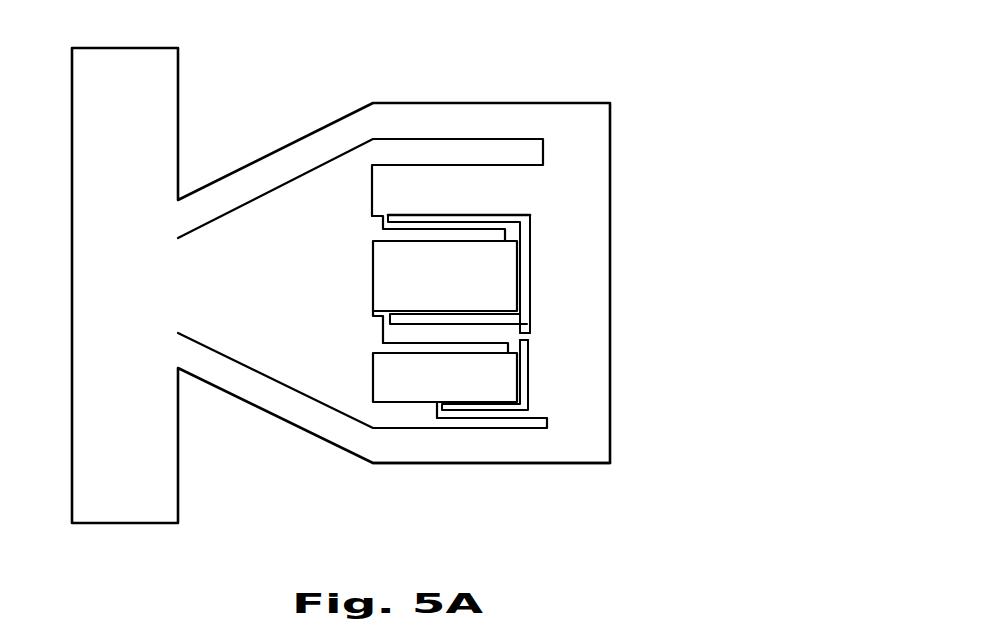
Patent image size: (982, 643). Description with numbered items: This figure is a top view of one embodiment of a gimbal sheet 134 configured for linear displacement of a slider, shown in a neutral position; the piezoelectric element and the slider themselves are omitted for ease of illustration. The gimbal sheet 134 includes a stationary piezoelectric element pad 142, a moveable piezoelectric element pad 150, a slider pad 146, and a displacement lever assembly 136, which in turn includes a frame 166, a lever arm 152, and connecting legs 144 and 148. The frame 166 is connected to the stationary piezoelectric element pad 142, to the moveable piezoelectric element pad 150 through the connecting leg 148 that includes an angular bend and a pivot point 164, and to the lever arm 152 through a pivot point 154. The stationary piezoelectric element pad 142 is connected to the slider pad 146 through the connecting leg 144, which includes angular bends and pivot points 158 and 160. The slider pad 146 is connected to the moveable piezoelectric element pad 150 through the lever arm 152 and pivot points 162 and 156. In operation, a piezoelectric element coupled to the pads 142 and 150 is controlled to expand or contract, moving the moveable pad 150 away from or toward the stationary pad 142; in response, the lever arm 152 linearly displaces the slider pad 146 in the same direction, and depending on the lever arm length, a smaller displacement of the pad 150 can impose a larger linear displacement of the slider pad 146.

The gimbal sheet 134 is at (275, 147).
The displacement lever assembly 136 is at (343, 342).
The stationary piezoelectric element pad 142 is at (462, 183).
The connecting leg 144 is at (478, 216).
The slider pad 146 is at (503, 265).
The connecting leg 148 is at (516, 422).
The moveable piezoelectric element pad 150 is at (508, 383).
The lever arm 152 is at (530, 341).
The pivot point 154 is at (524, 336).
The pivot point 156 is at (527, 350).
The pivot point 158 is at (383, 218).
The pivot point 160 is at (527, 230).
The pivot point 162 is at (383, 322).
The pivot point 164 is at (436, 416).
The frame 166 is at (523, 463).